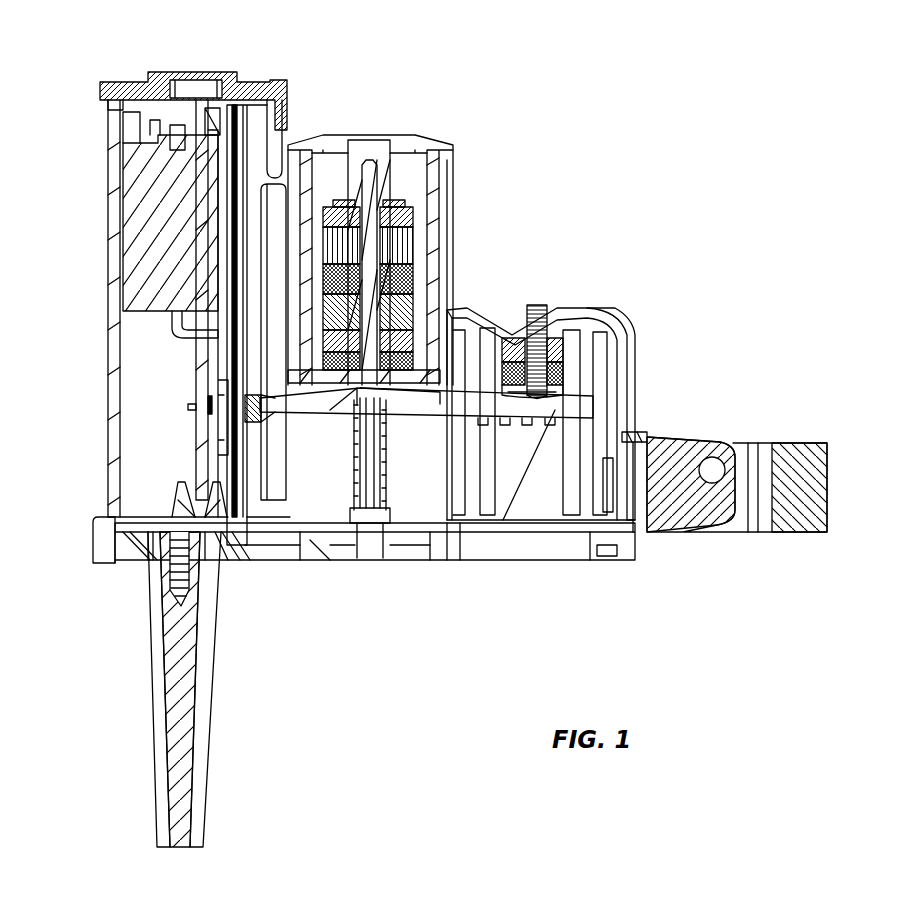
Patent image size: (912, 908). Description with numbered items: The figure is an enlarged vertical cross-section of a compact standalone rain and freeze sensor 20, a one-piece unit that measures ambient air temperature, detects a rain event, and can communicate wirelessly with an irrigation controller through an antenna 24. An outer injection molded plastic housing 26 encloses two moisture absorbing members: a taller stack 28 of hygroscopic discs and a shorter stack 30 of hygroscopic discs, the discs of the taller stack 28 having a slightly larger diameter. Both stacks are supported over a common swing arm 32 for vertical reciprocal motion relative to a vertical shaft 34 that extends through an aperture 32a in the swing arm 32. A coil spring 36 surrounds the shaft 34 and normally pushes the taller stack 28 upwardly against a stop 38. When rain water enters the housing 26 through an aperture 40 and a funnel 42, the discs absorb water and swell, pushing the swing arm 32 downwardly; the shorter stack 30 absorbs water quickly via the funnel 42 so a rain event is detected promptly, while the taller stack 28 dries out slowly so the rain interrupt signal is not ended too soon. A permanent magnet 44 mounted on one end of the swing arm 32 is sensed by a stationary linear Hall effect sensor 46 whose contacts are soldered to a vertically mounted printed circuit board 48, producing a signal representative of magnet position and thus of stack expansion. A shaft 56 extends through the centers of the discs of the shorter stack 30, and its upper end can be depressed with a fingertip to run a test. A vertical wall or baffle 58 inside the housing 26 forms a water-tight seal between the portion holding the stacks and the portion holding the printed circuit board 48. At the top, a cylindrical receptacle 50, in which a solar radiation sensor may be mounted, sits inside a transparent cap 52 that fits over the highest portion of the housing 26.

The rain and freeze sensor 20 is at (633, 93).
The antenna 24 is at (207, 798).
The housing 26 is at (108, 192).
The taller stack of hygroscopic discs 28 is at (402, 217).
The shorter stack of hygroscopic discs 30 is at (565, 356).
The swing arm 32 is at (455, 402).
The aperture 32a is at (398, 397).
The shaft 34 is at (355, 477).
The coil spring 36 is at (385, 492).
The stop 38 is at (385, 184).
The aperture 40 is at (397, 143).
The funnel 42 is at (497, 312).
The permanent magnet 44 is at (262, 416).
The Hall effect sensor 46 is at (196, 413).
The printed circuit board 48 is at (196, 383).
The cylindrical receptacle 50 is at (197, 83).
The transparent cap 52 is at (267, 84).
The shaft 56 is at (538, 305).
The baffle 58 is at (233, 540).